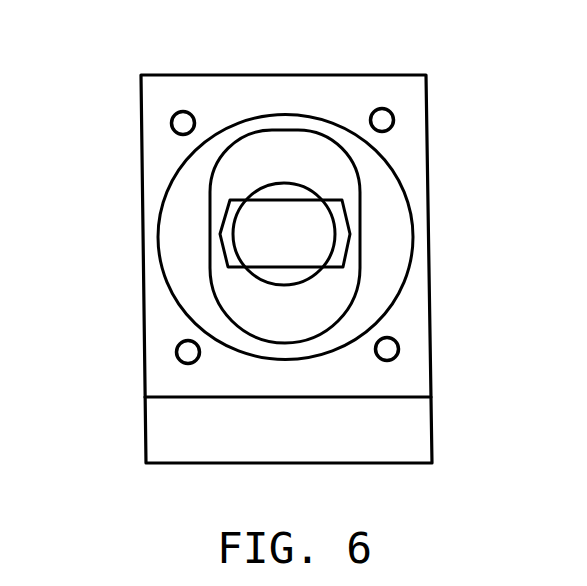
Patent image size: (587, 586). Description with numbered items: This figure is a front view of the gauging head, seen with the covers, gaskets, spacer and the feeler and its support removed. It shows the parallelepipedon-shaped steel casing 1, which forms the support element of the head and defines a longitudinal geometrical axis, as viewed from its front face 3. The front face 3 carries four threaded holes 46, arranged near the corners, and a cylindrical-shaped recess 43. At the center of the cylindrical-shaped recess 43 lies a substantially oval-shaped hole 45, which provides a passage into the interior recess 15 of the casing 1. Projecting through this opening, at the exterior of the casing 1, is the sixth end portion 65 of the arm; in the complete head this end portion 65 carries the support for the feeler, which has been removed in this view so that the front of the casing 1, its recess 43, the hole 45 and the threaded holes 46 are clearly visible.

The casing 1 is at (398, 433).
The front face 3 is at (357, 95).
The recess 15 is at (250, 303).
The cylindrical-shaped recess 43 is at (183, 214).
The oval-shaped hole 45 is at (323, 298).
The threaded holes 46 is at (385, 118).
The sixth end portion 65 is at (340, 232).